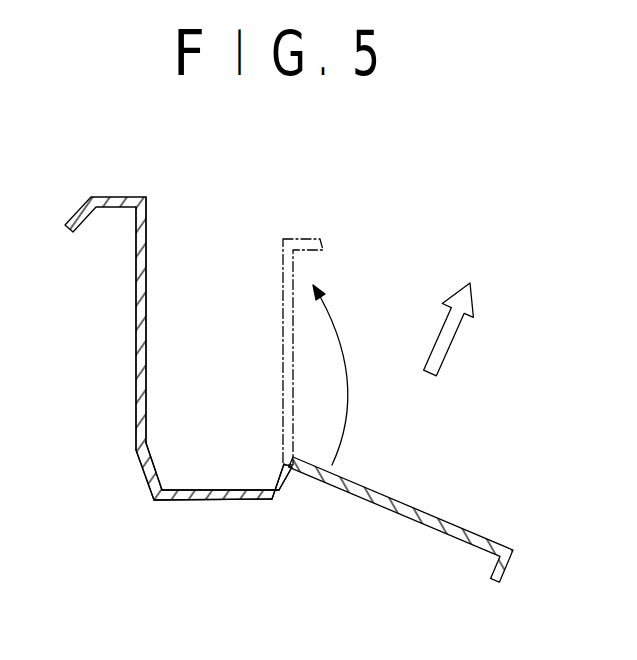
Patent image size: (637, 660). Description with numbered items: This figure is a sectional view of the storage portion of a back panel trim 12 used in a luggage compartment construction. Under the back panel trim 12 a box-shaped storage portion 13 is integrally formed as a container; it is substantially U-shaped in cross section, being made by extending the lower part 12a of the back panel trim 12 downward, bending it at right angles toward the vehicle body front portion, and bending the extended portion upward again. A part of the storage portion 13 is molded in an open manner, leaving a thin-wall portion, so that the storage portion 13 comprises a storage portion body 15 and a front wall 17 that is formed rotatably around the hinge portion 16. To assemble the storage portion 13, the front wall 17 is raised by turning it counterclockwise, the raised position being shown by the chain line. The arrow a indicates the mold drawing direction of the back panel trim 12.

The back panel trim 12 is at (98, 192).
The lower part of the back panel trim 12a is at (135, 313).
The storage portion 13 is at (178, 458).
The storage portion body 15 is at (207, 502).
The hinge portion 16 is at (292, 468).
The front wall 17 is at (283, 265).
The arrow indicating mold drawing direction a is at (447, 340).